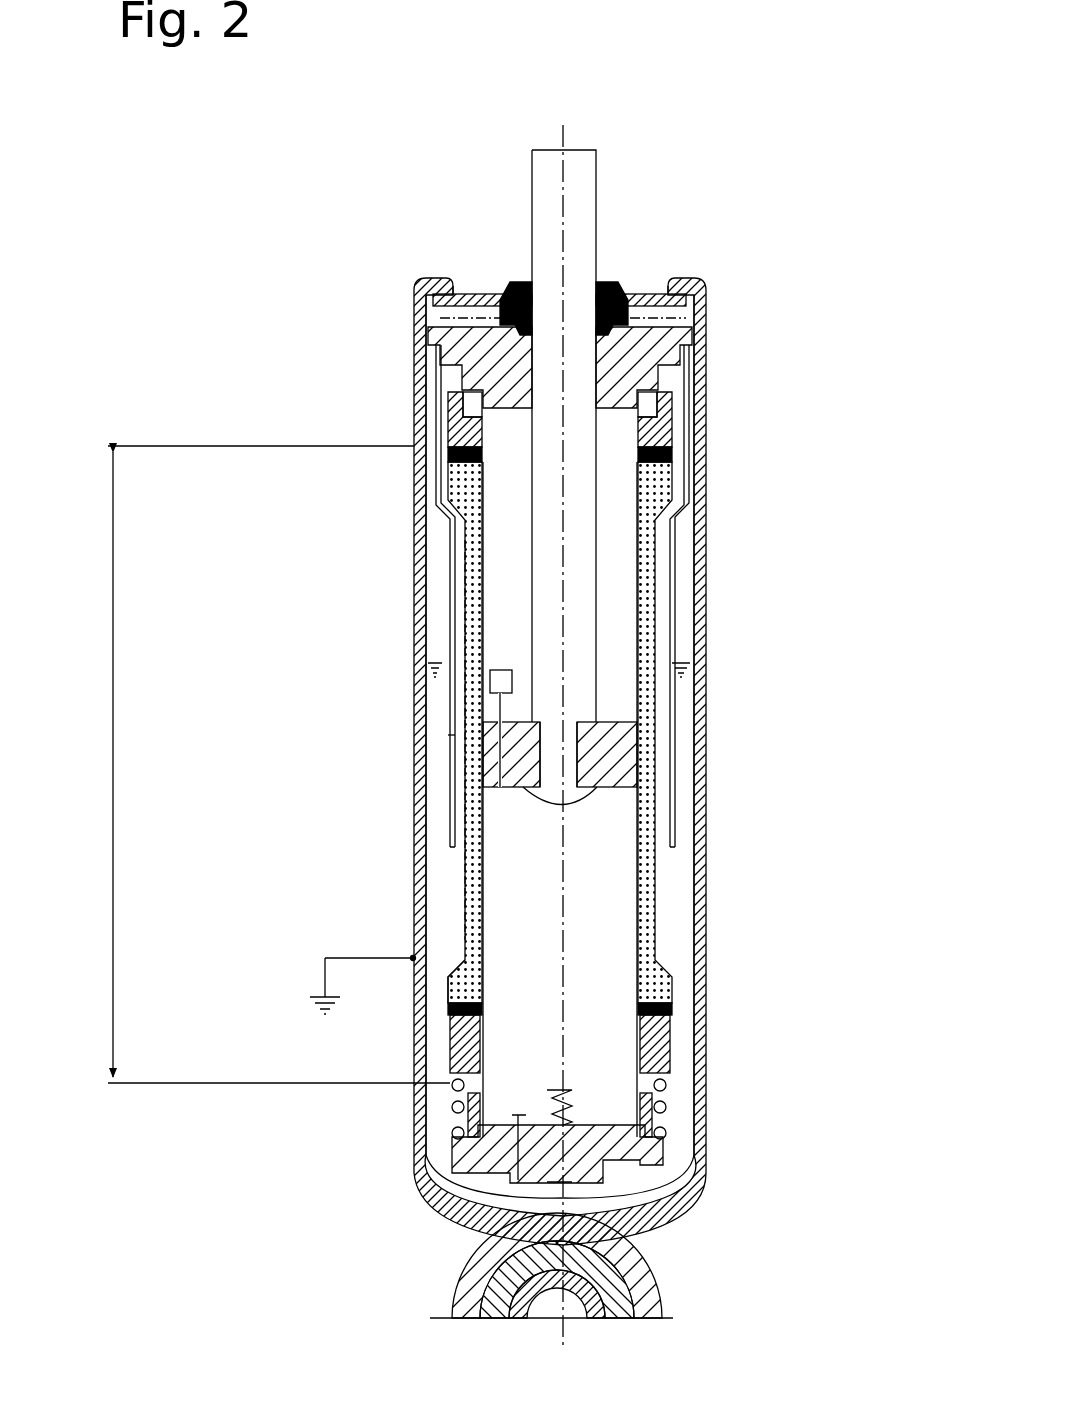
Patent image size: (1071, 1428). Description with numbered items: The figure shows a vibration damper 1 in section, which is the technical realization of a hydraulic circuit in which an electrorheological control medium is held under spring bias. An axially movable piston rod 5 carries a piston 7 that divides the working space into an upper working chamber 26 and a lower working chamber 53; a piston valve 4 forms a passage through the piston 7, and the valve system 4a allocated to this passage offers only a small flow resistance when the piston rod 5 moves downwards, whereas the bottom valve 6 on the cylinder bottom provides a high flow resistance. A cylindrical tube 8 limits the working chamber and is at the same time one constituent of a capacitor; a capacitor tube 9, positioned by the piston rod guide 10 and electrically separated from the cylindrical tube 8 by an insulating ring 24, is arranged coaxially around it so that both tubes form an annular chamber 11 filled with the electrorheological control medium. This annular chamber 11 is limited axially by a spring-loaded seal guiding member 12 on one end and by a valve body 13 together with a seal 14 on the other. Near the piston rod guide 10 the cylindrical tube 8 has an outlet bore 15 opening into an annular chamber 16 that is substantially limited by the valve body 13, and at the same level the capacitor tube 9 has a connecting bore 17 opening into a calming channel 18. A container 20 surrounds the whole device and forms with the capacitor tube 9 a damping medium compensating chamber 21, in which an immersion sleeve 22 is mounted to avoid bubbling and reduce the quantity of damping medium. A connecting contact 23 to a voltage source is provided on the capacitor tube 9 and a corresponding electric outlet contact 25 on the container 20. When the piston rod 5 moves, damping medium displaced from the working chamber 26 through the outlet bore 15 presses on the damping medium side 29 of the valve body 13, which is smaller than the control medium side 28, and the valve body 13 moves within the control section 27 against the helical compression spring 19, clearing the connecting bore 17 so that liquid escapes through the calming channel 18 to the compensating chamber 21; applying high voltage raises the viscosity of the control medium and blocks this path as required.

The vibration damper 1 is at (240, 1250).
The piston valve 4 is at (495, 770).
The valve system 4a is at (497, 683).
The piston rod 5 is at (588, 200).
The bottom valve 6 is at (620, 1170).
The piston 7 is at (620, 755).
The cylindrical tube 8 is at (478, 960).
The capacitor tube 9 is at (655, 880).
The piston rod guide 10 is at (680, 325).
The annular chamber 11 is at (655, 610).
The spring-loaded seal guiding member 12 is at (662, 1055).
The valve body 13 is at (670, 438).
The seal 14 is at (658, 480).
The outlet bore 15 is at (448, 432).
The annular chamber 16 is at (468, 368).
The connecting bore 17 is at (440, 395).
The calming channel 18 is at (460, 610).
The spring 19 is at (452, 1108).
The container 20 is at (703, 962).
The damping medium compensating chamber 21 is at (680, 1130).
The immersion sleeve 22 is at (448, 735).
The connecting contact 23 is at (462, 892).
The insulating ring 24 is at (690, 366).
The electric outlet contact 25 is at (363, 966).
The working chamber 26 is at (497, 540).
The control section 27 is at (110, 778).
The control medium side 28 is at (478, 470).
The damping medium side 29 is at (666, 405).
The lower working chamber 53 is at (495, 1025).